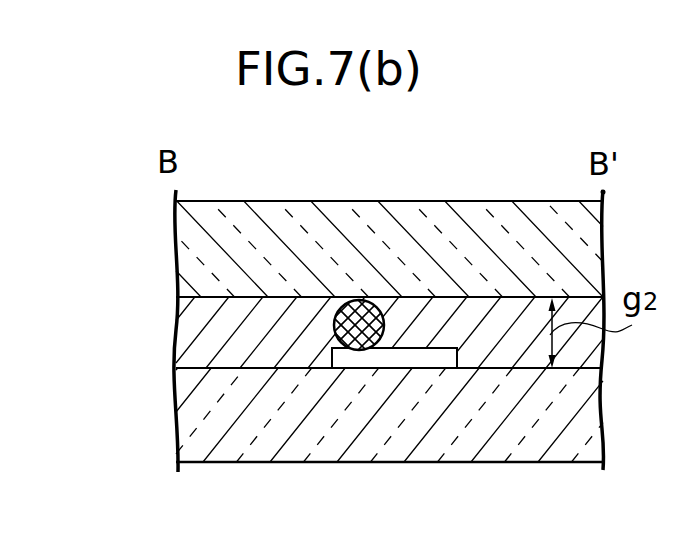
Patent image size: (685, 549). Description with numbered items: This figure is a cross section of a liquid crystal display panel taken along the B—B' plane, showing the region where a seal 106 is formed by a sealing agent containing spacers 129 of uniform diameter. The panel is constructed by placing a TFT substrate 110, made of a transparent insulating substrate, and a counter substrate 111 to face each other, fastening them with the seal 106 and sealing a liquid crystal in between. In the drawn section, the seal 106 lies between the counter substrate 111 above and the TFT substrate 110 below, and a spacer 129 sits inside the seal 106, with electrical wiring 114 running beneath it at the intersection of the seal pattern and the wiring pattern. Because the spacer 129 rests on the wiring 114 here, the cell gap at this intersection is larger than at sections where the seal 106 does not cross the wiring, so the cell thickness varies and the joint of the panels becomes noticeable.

The counter substrate 111 is at (197, 248).
The seal 106 is at (267, 323).
The TFT substrate 110 is at (203, 428).
The electrical wiring 114 is at (433, 353).
The spacer 129 is at (358, 300).